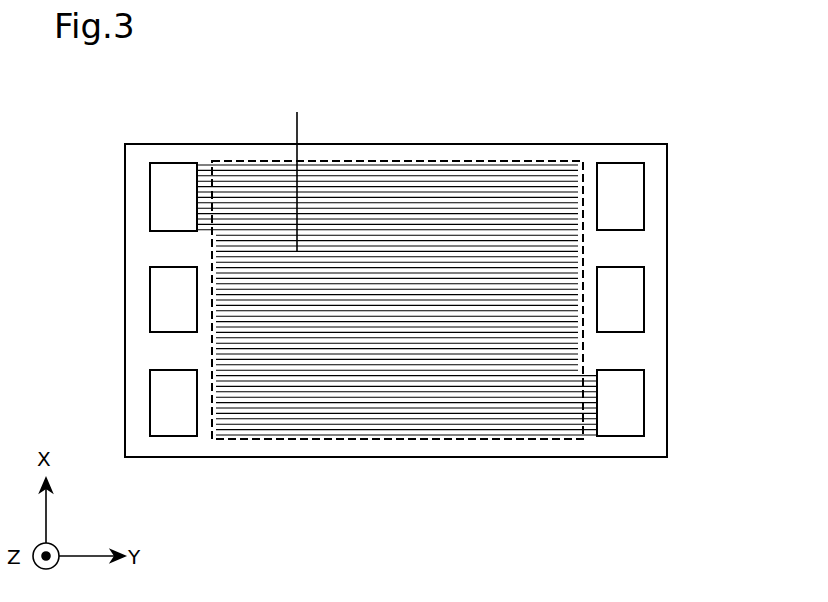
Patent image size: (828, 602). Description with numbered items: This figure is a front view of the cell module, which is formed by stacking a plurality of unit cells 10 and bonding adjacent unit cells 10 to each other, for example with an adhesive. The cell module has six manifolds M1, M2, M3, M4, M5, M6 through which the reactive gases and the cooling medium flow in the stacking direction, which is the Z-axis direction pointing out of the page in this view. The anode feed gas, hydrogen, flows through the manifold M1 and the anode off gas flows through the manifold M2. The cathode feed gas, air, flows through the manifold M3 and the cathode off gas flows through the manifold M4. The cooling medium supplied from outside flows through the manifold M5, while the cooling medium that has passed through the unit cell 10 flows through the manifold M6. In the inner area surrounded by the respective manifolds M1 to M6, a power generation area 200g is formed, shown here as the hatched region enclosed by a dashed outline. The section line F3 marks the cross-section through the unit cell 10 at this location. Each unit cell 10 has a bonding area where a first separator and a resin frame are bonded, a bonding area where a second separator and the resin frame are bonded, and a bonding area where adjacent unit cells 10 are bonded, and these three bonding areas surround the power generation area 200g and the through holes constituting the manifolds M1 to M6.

The unit cell 10 is at (616, 107).
The power generation area 200g is at (400, 160).
The section line F3 is at (297, 120).
The manifold M1 is at (636, 397).
The manifold M2 is at (160, 195).
The manifold M3 is at (160, 396).
The manifold M4 is at (636, 196).
The manifold M5 is at (636, 296).
The manifold M6 is at (160, 295).